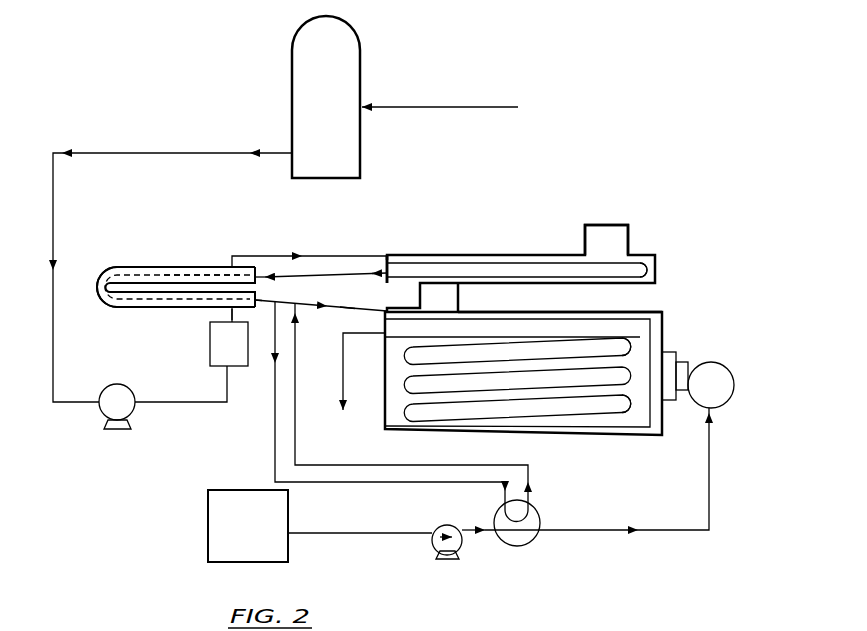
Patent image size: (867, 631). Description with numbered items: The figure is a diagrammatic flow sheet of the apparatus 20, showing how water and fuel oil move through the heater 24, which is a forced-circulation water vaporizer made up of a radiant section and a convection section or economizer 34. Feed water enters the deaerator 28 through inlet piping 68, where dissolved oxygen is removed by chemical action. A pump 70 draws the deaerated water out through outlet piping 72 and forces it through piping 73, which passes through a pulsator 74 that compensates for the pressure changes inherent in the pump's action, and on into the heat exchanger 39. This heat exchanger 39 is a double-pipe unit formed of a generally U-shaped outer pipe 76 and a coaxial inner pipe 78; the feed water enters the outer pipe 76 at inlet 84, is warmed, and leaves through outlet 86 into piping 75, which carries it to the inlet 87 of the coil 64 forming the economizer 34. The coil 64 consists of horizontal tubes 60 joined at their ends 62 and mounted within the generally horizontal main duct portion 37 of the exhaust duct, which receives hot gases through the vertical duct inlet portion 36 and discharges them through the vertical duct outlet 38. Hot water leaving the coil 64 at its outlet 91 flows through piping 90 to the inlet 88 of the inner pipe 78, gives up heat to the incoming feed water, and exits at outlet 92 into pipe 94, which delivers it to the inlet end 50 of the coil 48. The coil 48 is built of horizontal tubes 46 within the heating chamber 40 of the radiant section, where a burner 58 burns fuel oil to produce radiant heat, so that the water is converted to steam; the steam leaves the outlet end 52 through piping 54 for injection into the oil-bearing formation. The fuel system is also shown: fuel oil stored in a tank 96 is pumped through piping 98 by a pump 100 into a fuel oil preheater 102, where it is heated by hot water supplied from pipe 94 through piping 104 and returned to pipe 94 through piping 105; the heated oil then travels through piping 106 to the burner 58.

The steam generating unit 20 is at (560, 192).
The heater 24 is at (668, 303).
The deaerator 28 is at (356, 27).
The economizer 34 is at (583, 292).
The duct inlet portion 36 is at (462, 296).
The main duct portion 37 is at (466, 243).
The duct outlet 38 is at (629, 246).
The heat exchanger 39 is at (163, 262).
The heating chamber 40 is at (634, 354).
The tubes 46 is at (502, 378).
The coil 48 is at (637, 408).
The inlet end of coil 50 is at (386, 318).
The outlet end of coil 52 is at (386, 337).
The piping 54 is at (343, 398).
The burner 58 is at (712, 380).
The horizontal tubes 60 is at (522, 263).
The tube ends 62 is at (388, 268).
The coil 64 is at (656, 268).
The inlet piping 68 is at (433, 107).
The pump 70 is at (134, 402).
The outlet piping 72 is at (190, 151).
The piping 73 is at (230, 313).
The pulsator 74 is at (210, 345).
The piping 75 is at (322, 256).
The outer pipe 76 is at (130, 307).
The inner pipe 78 is at (211, 276).
The inlet 84 is at (234, 312).
The outlet 86 is at (232, 255).
The inlet of coil 87 is at (389, 262).
The inlet 88 is at (262, 277).
The piping 90 is at (321, 296).
The outlet of coil 91 is at (378, 273).
The outlet 92 is at (258, 300).
The pipe 94 is at (347, 309).
The tank 96 is at (283, 518).
The piping 98 is at (382, 534).
The pump 100 is at (450, 524).
The fuel oil preheater 102 is at (510, 537).
The piping 104 is at (275, 388).
The piping 105 is at (295, 392).
The piping 106 is at (650, 530).